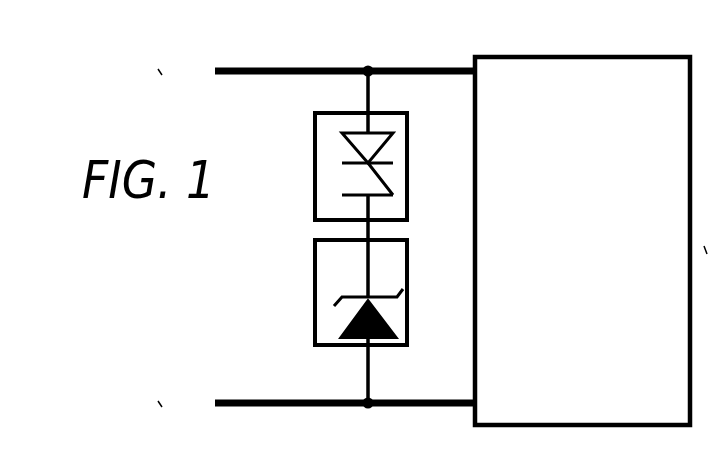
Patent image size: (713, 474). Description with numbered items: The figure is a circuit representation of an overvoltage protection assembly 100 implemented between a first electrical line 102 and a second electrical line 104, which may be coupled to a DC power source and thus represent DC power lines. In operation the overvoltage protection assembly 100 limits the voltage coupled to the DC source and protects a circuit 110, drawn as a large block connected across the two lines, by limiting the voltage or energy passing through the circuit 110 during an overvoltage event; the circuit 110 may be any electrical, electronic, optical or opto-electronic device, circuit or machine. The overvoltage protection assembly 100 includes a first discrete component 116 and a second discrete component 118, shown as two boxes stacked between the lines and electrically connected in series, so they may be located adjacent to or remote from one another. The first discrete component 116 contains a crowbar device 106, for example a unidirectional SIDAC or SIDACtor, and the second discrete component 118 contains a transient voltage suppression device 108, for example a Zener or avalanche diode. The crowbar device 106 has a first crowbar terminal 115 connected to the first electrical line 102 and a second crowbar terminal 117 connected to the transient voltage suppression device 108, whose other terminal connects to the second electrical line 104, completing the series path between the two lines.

The overvoltage protection assembly 100 is at (338, 43).
The first electrical line 102 is at (257, 77).
The second electrical line 104 is at (225, 398).
The crowbar device 106 is at (378, 164).
The transient voltage suppression device 108 is at (385, 328).
The circuit 110 is at (597, 262).
The first crowbar terminal 115 is at (376, 70).
The first discrete component 116 is at (315, 183).
The second crowbar terminal 117 is at (378, 220).
The second discrete component 118 is at (315, 257).